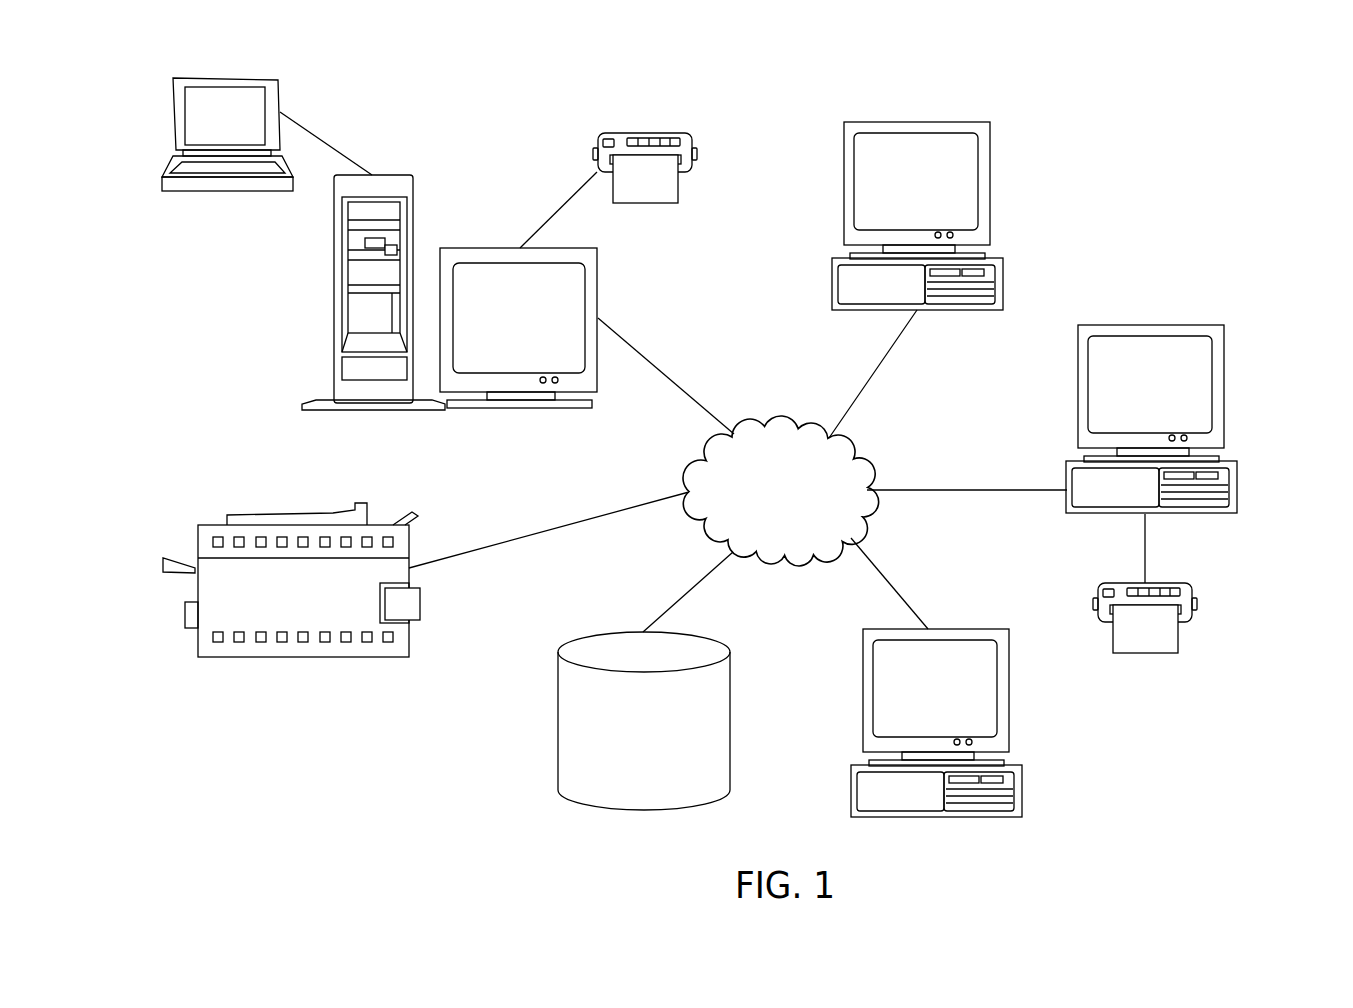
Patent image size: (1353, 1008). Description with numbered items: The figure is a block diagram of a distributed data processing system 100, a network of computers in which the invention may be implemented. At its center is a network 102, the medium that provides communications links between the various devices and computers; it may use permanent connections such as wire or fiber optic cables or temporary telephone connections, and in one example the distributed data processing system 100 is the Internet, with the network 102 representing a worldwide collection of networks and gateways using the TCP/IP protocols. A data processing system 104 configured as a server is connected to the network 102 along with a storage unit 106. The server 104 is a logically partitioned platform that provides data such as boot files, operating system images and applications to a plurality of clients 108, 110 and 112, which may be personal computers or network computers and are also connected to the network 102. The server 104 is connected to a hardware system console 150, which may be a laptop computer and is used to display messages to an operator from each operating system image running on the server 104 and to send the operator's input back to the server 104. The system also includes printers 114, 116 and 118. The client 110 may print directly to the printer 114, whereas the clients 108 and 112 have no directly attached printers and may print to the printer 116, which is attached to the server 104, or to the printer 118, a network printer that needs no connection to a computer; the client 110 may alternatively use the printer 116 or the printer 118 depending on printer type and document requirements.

The distributed data processing system 100 is at (1113, 215).
The network 102 is at (800, 510).
The data processing system configured as a server 104 is at (470, 165).
The storage unit 106 is at (663, 751).
The client 108 is at (928, 189).
The client 110 is at (1174, 405).
The client 112 is at (956, 713).
The printer 114 is at (1198, 603).
The printer 116 is at (697, 153).
The network printer 118 is at (277, 610).
The hardware system console 150 is at (241, 133).